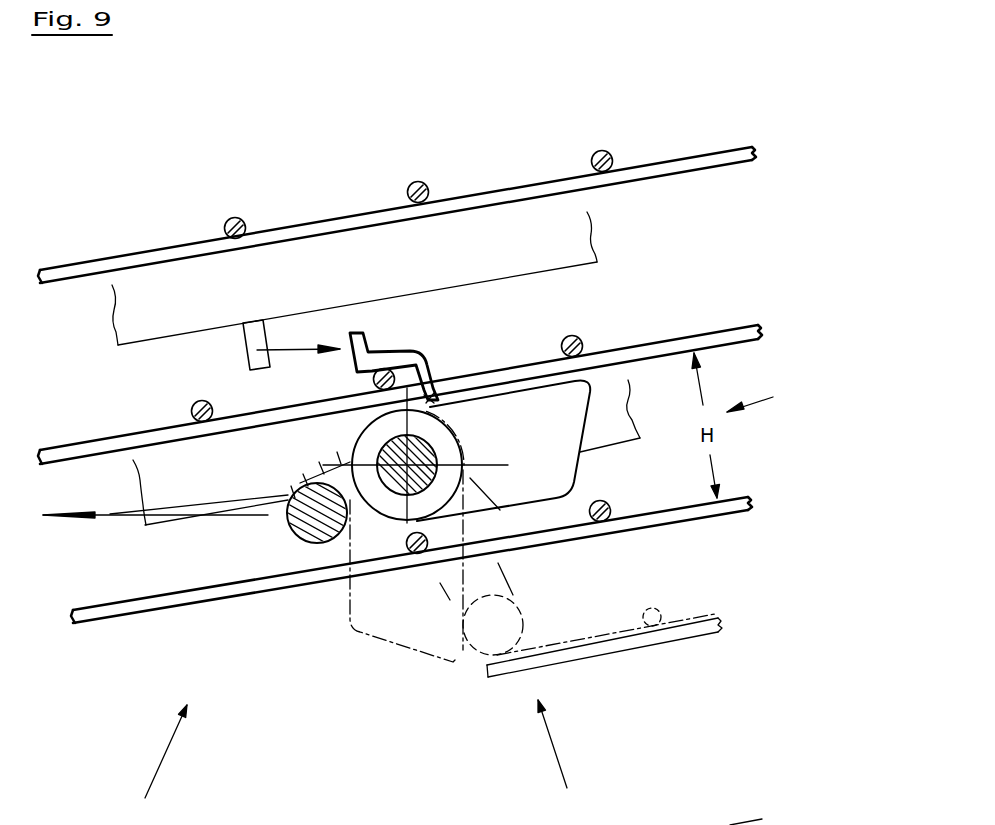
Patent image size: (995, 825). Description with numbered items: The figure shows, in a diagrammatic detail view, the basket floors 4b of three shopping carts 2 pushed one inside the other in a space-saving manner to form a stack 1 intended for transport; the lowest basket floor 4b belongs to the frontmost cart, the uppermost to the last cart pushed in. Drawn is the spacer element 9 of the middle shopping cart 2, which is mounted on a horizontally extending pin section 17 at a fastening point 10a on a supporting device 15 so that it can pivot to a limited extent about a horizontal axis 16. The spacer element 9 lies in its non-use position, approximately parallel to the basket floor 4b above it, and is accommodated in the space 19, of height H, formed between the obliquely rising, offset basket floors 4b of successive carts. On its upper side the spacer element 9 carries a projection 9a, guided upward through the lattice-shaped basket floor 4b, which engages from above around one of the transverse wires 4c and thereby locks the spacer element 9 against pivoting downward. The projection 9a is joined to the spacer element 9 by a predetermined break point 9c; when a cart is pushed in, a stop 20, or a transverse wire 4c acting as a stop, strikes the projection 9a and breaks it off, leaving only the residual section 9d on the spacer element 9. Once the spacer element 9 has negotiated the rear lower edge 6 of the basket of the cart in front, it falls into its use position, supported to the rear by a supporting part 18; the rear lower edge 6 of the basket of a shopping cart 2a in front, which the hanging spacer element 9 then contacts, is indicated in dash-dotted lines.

The stack 1 is at (559, 762).
The shopping cart 2 is at (160, 765).
The shopping cart 2a is at (705, 645).
The basket floor 4b is at (642, 165).
The transverse wire 4c is at (237, 217).
The rear lower edge 6 is at (487, 637).
The spacer element 9 is at (482, 427).
The projection 9a is at (407, 350).
The predetermined break point 9c is at (427, 398).
The section 9d is at (470, 478).
The fastening point 10a is at (317, 523).
The supporting device 15 is at (195, 468).
The horizontal axis 16 is at (317, 523).
The pin section 17 is at (395, 475).
The supporting part 18 is at (298, 526).
The space 19 is at (764, 398).
The stop 20 is at (255, 340).